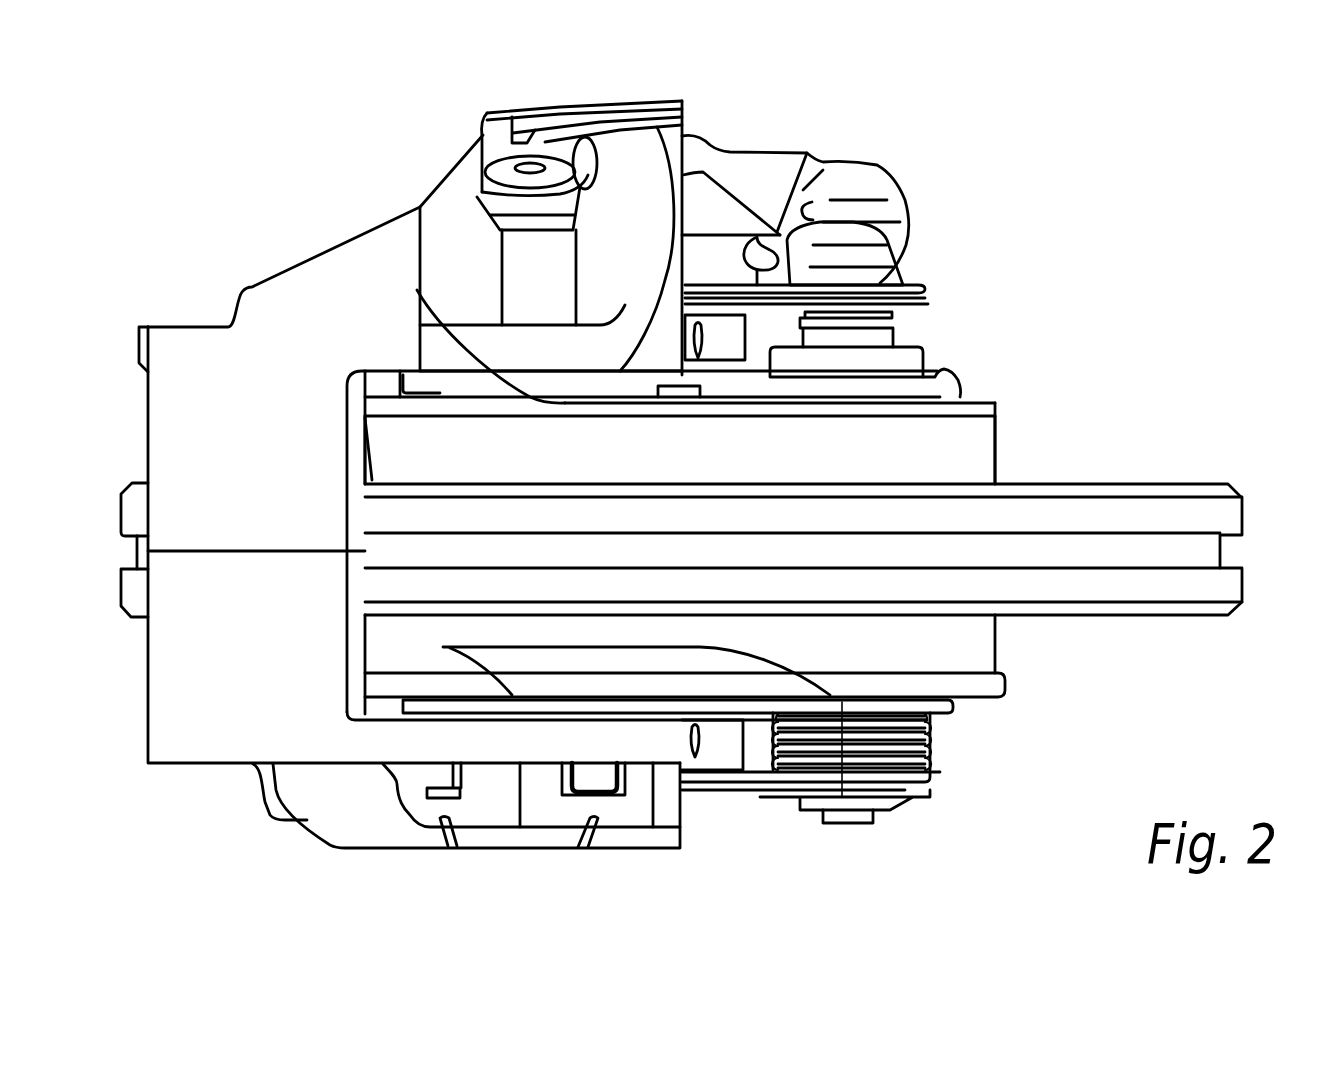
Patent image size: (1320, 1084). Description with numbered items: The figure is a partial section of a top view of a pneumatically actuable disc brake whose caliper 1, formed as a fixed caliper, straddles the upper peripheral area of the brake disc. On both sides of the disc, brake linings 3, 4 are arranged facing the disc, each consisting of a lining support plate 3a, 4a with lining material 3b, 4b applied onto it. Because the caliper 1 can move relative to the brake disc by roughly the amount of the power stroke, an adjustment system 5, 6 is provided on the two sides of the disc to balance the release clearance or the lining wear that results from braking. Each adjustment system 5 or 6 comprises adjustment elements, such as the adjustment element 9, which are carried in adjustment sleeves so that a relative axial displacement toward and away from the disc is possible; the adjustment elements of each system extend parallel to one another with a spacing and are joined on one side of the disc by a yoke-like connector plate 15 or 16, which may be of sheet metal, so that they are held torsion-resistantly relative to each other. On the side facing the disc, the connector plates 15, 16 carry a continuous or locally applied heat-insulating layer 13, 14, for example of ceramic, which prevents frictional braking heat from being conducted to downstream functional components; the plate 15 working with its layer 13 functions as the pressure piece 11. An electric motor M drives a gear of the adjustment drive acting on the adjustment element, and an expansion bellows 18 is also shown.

The caliper 1 is at (262, 305).
The heat-insulating layer 13 is at (441, 397).
The heat-insulating layer 14 is at (443, 647).
The connector plate 15 is at (942, 390).
The brake lining 3 is at (787, 428).
The lining support plate 3a is at (985, 408).
The lining material 3b is at (962, 462).
The brake lining 4 is at (791, 698).
The lining support plate 4a is at (993, 695).
The lining material 4b is at (975, 650).
The adjustment system 5 is at (919, 263).
The adjustment element 9 is at (887, 337).
The pressure piece 11 is at (945, 343).
The adjustment system 6 is at (788, 797).
The connector plate 16 is at (942, 713).
The expansion bellows 18 is at (930, 755).
The electric motor M is at (712, 330).